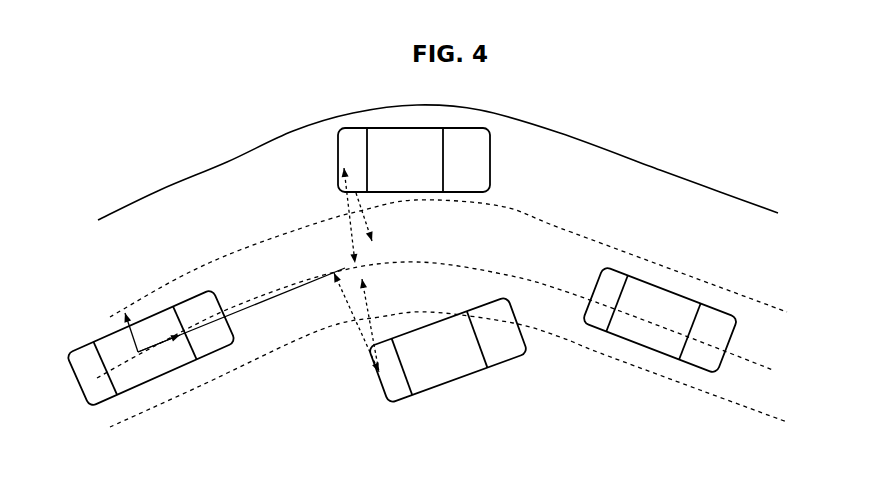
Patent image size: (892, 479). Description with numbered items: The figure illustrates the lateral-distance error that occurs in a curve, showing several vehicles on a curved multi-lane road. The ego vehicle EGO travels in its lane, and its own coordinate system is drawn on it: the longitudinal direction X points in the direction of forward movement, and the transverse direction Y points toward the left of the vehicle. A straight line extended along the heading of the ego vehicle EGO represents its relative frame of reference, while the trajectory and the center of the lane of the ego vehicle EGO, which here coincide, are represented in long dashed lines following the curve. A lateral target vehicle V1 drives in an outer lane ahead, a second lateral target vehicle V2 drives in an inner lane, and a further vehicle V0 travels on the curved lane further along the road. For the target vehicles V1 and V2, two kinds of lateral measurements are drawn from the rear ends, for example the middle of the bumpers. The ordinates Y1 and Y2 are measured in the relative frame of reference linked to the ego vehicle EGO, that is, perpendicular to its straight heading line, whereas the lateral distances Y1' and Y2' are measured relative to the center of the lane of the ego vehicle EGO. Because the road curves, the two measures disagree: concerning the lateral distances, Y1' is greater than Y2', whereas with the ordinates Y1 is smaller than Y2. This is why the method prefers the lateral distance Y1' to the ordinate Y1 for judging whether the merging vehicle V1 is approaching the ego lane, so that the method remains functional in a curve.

The ego vehicle EGO is at (151, 372).
The vehicle V0 is at (660, 320).
The lateral target vehicle V1 is at (414, 160).
The lateral target vehicle V2 is at (448, 349).
The longitudinal direction X is at (159, 347).
The transverse direction Y is at (133, 330).
The ordinate of vehicle V1 Y1 is at (372, 217).
The lateral distance of vehicle V1 Y1' is at (334, 216).
The ordinate of vehicle V2 Y2 is at (346, 323).
The lateral distance of vehicle V2 Y2' is at (378, 325).